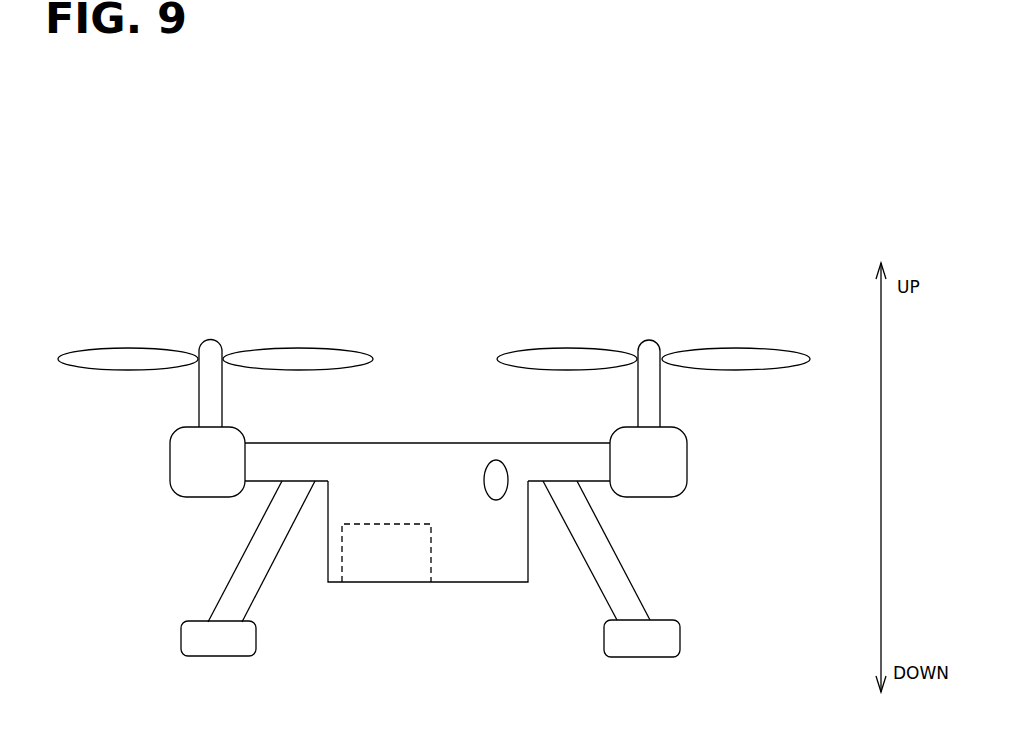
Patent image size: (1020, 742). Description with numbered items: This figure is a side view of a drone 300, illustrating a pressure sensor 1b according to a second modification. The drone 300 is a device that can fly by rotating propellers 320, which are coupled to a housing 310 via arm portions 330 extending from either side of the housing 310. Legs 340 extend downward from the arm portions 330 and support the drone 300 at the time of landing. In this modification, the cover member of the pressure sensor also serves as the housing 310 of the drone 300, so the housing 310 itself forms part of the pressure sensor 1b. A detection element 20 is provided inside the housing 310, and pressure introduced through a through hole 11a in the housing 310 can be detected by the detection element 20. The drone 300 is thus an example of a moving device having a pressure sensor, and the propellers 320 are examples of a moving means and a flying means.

The drone 300 is at (659, 160).
The propellers 320 is at (243, 348).
The arm portions 330 is at (263, 443).
The housing 310 is at (405, 583).
The legs 340 is at (225, 587).
The detection element 20 is at (358, 524).
The through hole 11a is at (492, 500).
The pressure sensor 1b is at (483, 585).